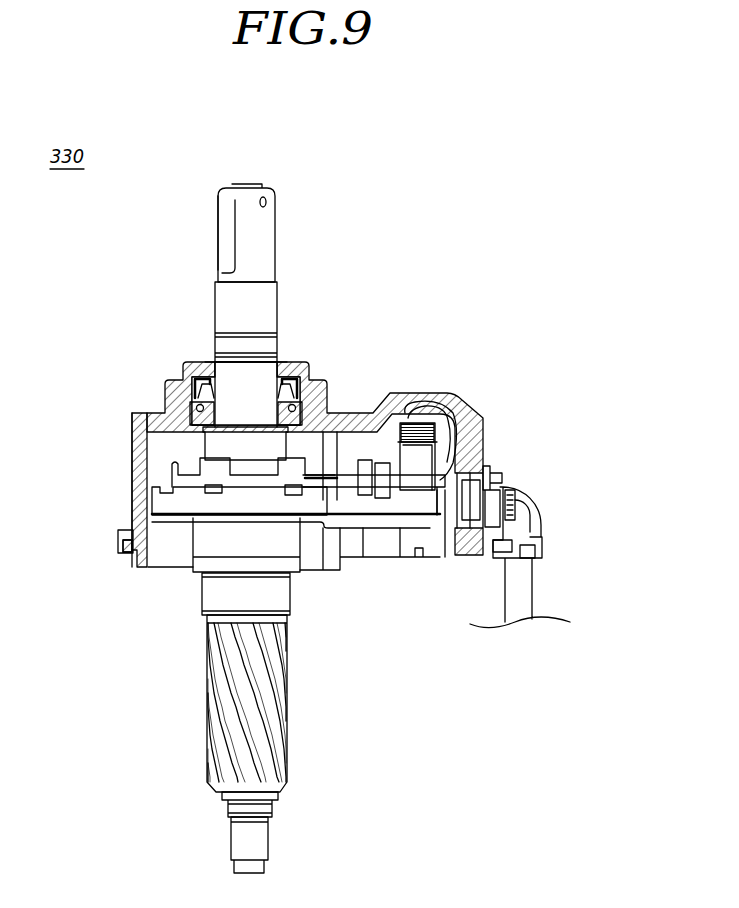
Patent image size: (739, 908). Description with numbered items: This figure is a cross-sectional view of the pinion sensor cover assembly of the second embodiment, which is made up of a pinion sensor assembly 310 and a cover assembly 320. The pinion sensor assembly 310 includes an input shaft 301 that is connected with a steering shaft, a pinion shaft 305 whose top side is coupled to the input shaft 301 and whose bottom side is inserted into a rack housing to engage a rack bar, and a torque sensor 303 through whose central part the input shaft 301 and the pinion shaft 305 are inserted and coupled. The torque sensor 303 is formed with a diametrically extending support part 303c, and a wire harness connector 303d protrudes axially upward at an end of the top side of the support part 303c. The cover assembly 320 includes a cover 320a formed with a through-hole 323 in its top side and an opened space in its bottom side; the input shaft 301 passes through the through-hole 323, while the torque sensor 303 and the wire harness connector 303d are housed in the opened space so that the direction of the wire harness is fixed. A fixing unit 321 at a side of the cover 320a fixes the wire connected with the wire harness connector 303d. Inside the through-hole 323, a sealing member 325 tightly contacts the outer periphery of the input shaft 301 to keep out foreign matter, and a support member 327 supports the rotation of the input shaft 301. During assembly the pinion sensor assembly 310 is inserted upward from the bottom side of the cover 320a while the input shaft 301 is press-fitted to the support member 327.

The input shaft 301 is at (258, 222).
The through-hole 323 is at (201, 346).
The sealing member 325 is at (182, 385).
The support member 327 is at (188, 410).
The cover assembly 320 is at (449, 349).
The cover 320a is at (137, 460).
The torque sensor 303 is at (157, 500).
The support part 303c is at (370, 507).
The wire harness connector 303d is at (466, 412).
The fixing unit 321 is at (515, 455).
The pinion shaft 305 is at (208, 594).
The pinion sensor assembly 310 is at (325, 684).